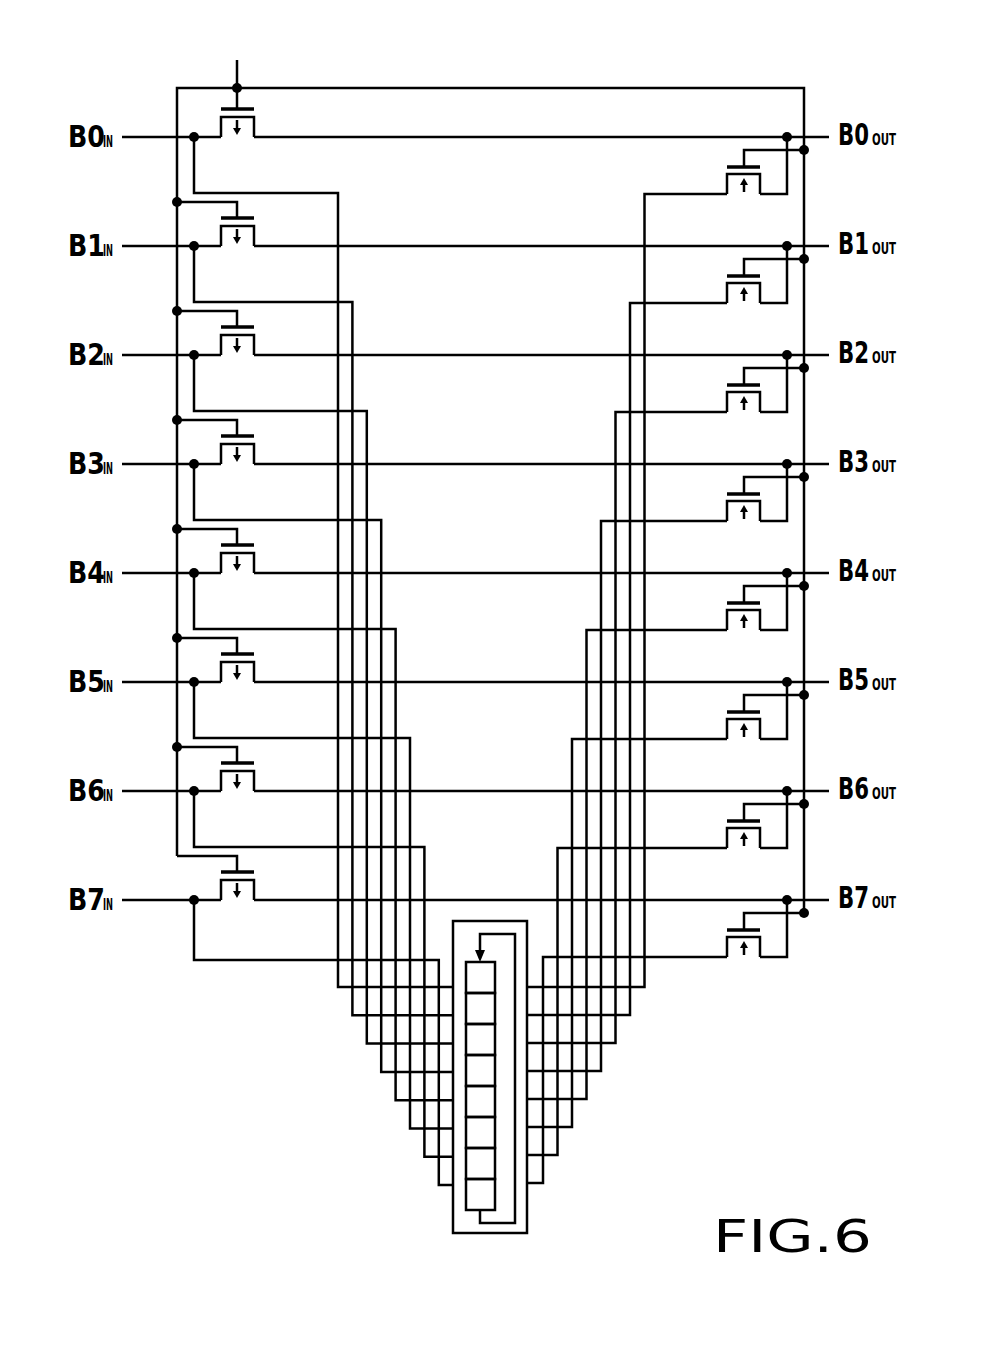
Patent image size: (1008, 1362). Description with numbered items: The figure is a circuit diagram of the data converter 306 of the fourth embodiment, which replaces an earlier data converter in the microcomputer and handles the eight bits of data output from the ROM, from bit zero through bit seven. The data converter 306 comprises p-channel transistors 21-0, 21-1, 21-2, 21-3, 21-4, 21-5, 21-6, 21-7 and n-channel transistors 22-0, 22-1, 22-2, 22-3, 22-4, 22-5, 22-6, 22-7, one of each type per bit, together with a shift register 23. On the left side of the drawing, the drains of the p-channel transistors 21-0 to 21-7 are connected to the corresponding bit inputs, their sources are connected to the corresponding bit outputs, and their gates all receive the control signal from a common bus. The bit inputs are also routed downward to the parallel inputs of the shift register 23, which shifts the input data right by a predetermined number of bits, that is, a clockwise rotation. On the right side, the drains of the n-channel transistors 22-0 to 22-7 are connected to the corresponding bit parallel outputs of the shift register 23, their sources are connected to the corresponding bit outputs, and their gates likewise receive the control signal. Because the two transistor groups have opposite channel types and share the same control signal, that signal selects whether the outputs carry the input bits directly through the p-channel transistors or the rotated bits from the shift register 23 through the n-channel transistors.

The data converter 306 is at (782, 66).
The p-channel transistor 21-0 is at (275, 112).
The p-channel transistor 21-1 is at (250, 221).
The p-channel transistor 21-2 is at (250, 330).
The p-channel transistor 21-3 is at (250, 439).
The p-channel transistor 21-4 is at (250, 548).
The p-channel transistor 21-5 is at (250, 657).
The p-channel transistor 21-6 is at (250, 766).
The p-channel transistor 21-7 is at (253, 878).
The n-channel transistor 22-0 is at (730, 163).
The n-channel transistor 22-1 is at (730, 272).
The n-channel transistor 22-2 is at (730, 381).
The n-channel transistor 22-3 is at (730, 490).
The n-channel transistor 22-4 is at (730, 599).
The n-channel transistor 22-5 is at (730, 708).
The n-channel transistor 22-6 is at (730, 817).
The n-channel transistor 22-7 is at (730, 926).
The shift register 23 is at (453, 1218).